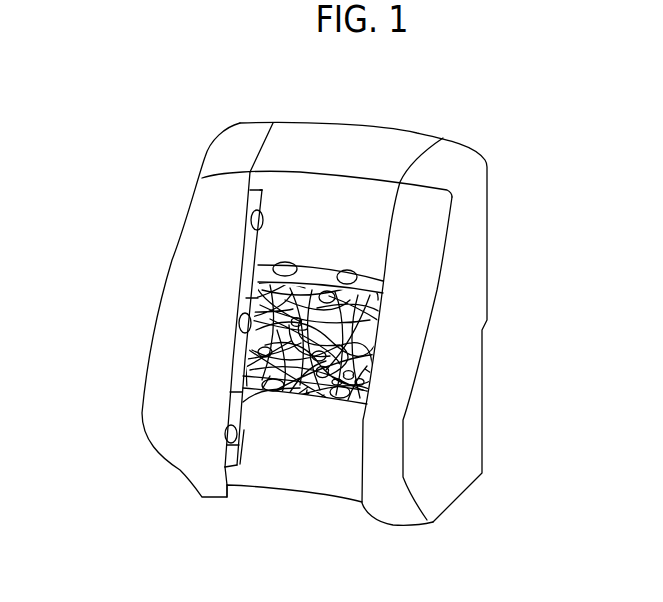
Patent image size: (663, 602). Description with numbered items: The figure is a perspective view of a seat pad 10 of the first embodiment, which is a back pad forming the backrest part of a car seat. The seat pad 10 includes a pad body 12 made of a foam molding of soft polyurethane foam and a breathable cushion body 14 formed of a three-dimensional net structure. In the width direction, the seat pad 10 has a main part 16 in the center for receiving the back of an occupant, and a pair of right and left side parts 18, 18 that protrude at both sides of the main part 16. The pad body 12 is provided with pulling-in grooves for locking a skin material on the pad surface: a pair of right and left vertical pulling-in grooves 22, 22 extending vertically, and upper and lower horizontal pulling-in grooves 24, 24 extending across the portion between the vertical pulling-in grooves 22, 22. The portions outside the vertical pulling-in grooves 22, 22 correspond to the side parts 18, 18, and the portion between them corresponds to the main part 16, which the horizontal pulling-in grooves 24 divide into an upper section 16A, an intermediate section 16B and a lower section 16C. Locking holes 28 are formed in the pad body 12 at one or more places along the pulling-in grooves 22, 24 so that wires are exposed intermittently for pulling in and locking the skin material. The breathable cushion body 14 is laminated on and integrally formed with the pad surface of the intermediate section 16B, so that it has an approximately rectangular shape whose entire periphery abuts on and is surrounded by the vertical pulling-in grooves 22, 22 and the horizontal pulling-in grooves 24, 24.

The seat pad 10 is at (379, 74).
The pad body 12 is at (473, 272).
The breathable cushion body 14 is at (365, 352).
The main part 16 is at (338, 207).
The upper section 16A is at (293, 207).
The intermediate section 16B is at (243, 293).
The lower section 16C is at (268, 463).
The side part 18 is at (183, 375).
The vertical pulling-in groove 22 is at (247, 375).
The horizontal pulling-in groove 24 is at (333, 258).
The locking hole 28 is at (273, 253).